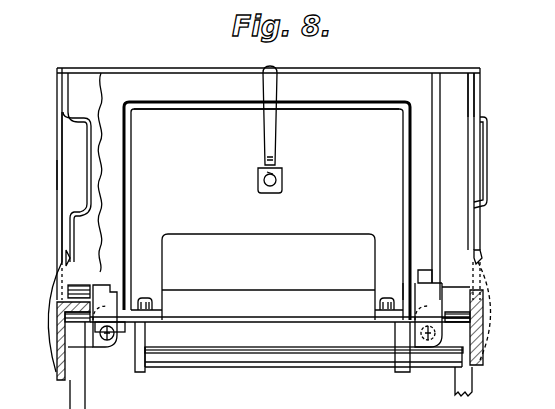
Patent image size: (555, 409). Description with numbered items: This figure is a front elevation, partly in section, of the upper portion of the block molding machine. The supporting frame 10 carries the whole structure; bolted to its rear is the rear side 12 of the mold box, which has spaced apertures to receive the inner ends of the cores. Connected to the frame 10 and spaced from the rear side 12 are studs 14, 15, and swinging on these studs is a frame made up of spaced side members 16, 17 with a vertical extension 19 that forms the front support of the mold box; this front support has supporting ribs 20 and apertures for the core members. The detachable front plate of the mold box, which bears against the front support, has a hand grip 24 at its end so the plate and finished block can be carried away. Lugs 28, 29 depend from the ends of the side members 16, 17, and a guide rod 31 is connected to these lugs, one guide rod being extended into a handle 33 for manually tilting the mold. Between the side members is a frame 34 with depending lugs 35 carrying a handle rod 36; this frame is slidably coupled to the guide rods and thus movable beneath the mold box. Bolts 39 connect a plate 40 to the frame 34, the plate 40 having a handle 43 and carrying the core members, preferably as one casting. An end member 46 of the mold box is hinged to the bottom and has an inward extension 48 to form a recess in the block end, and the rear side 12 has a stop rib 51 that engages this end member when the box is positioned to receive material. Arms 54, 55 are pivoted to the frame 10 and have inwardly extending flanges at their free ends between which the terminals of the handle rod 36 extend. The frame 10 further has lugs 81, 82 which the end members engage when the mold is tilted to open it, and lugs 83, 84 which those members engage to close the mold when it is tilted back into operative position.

The supporting frame 10 is at (56, 355).
The rear side of the mold box 12 is at (87, 76).
The stud 14 is at (112, 296).
The stud 15 is at (443, 290).
The side member 16 is at (128, 292).
The side member 17 is at (404, 292).
The vertical extension 19 is at (455, 98).
The supporting ribs 20 is at (436, 146).
The hand grip 24 is at (488, 160).
The lug 28 is at (108, 348).
The lug 29 is at (428, 348).
The guide rod 31 is at (420, 338).
The handle 33 is at (128, 338).
The frame 34 is at (268, 277).
The depending lugs 35 is at (137, 372).
The handle rod 36 is at (245, 363).
The bolts 39 is at (266, 297).
The plate 40 is at (351, 111).
The handle 43 is at (270, 118).
The end member 46 is at (56, 172).
The inward extension 48 is at (67, 123).
The stop rib 51 is at (482, 72).
The arm 54 is at (70, 392).
The arm 55 is at (474, 390).
The lug 81 is at (46, 300).
The lug 82 is at (488, 298).
The lug 83 is at (62, 256).
The lug 84 is at (483, 258).